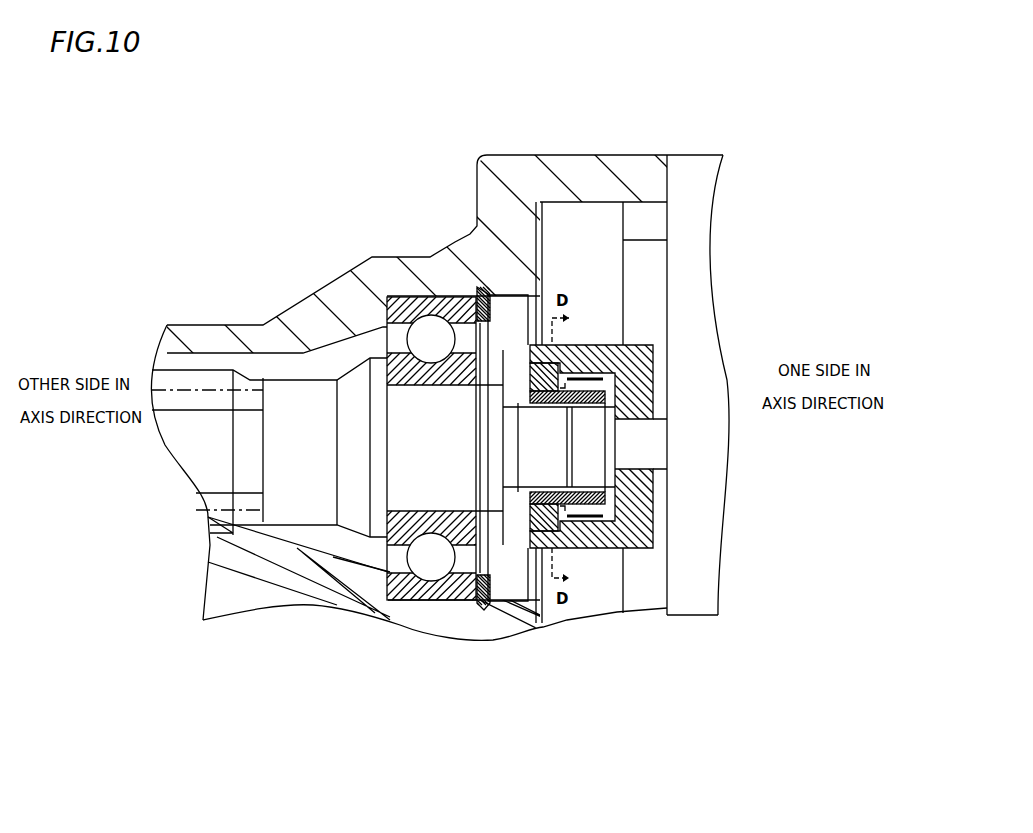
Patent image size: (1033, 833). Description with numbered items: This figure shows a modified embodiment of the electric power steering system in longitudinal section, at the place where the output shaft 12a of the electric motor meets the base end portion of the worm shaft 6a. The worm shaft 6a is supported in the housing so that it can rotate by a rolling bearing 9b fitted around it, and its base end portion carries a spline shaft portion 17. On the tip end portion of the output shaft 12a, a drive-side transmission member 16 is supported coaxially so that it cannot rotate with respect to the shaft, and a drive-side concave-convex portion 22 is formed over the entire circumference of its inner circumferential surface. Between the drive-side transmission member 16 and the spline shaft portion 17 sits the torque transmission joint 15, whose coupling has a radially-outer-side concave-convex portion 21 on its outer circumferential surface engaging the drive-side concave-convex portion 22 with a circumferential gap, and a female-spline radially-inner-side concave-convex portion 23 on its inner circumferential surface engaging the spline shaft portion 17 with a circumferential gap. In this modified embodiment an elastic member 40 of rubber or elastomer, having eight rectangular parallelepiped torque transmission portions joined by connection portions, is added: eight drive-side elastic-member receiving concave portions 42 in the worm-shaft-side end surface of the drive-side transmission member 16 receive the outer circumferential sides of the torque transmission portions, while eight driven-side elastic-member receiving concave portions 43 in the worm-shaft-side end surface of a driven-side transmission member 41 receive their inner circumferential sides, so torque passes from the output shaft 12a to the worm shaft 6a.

The worm shaft 6a is at (210, 438).
The rolling bearing 9b is at (432, 560).
The output shaft 12a is at (662, 465).
The torque transmission joint 15 is at (568, 341).
The drive-side transmission member 16 is at (642, 354).
The spline shaft portion 17 is at (540, 454).
The radially-outer-side concave-convex portion 21 is at (557, 370).
The drive-side concave-convex portion 22 is at (655, 348).
The radially-inner-side concave-convex portion 23 is at (567, 457).
The elastic member 40 is at (536, 601).
The driven-side transmission member 41 is at (563, 522).
The drive-side elastic-member receiving concave portions 42 is at (528, 293).
The driven-side elastic-member receiving concave portions 43 is at (488, 590).